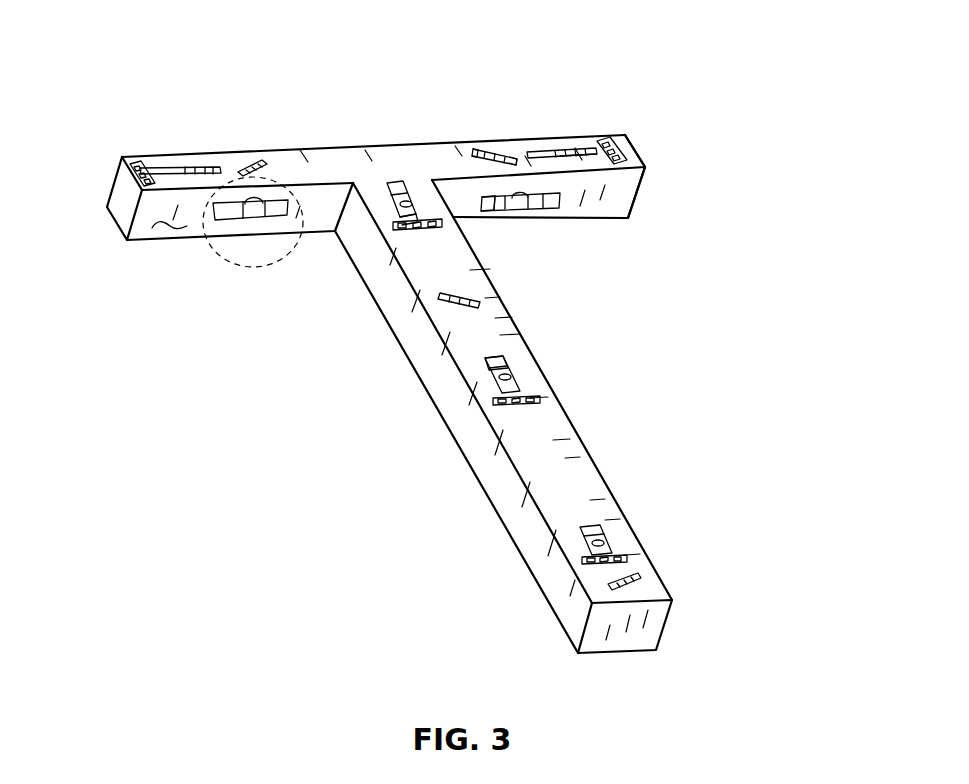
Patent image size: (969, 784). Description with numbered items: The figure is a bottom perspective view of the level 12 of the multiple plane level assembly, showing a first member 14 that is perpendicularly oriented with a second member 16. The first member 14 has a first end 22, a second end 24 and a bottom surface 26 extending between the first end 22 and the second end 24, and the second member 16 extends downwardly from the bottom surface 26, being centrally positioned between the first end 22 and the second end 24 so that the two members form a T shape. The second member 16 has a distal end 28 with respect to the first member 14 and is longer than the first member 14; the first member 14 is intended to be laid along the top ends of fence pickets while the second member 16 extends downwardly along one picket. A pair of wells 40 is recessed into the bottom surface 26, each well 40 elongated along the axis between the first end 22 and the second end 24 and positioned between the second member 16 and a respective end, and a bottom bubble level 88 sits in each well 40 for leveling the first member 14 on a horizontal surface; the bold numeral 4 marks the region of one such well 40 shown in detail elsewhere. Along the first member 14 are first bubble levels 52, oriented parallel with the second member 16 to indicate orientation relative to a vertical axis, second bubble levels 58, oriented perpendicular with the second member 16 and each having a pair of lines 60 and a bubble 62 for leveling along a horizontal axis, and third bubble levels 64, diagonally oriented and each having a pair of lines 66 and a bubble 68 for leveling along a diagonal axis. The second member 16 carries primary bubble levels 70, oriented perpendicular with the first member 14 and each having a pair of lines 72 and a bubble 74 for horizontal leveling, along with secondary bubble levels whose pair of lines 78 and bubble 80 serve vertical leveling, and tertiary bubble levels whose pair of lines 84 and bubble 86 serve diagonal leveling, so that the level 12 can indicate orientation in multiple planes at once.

The level 12 is at (390, 84).
The first member 14 is at (370, 224).
The second member 16 is at (503, 442).
The first end 22 is at (112, 206).
The second end 24 is at (641, 137).
The bottom surface 26 is at (162, 227).
The distal end 28 is at (603, 646).
The detail area of FIG. 4 is at (218, 250).
The wells 40 is at (278, 221).
The first bubble levels 52 is at (133, 164).
The second bubble levels 58 is at (212, 167).
The pair of lines 60 is at (566, 150).
The bubble 62 is at (573, 160).
The third bubble levels 64 is at (242, 162).
The pair of lines 66 is at (474, 150).
The bubble 68 is at (511, 160).
The primary bubble levels 70 is at (388, 182).
The pair of lines 72 is at (502, 380).
The bubble 74 is at (506, 381).
The pair of lines 78 is at (440, 229).
The bubble 80 is at (414, 216).
The pair of lines 84 is at (478, 305).
The bubble 86 is at (624, 578).
The bottom bubble levels 88 is at (236, 221).